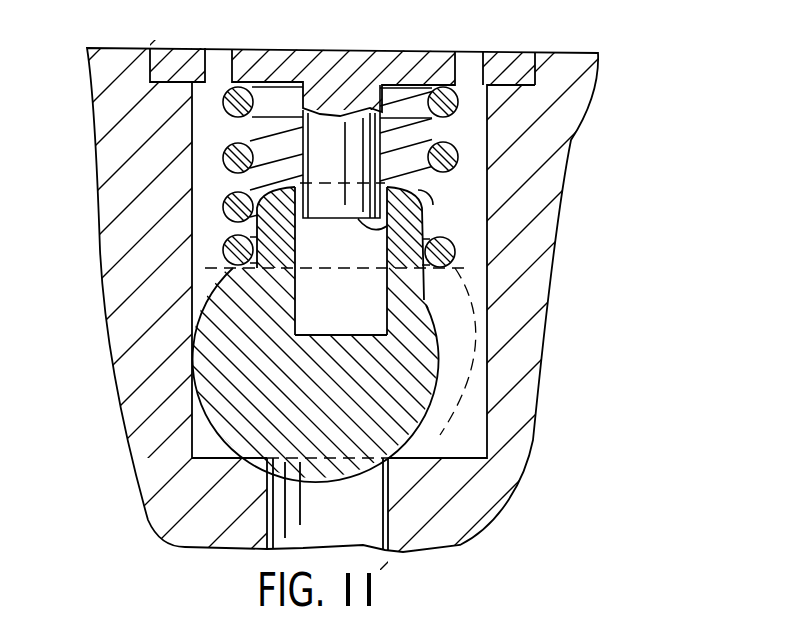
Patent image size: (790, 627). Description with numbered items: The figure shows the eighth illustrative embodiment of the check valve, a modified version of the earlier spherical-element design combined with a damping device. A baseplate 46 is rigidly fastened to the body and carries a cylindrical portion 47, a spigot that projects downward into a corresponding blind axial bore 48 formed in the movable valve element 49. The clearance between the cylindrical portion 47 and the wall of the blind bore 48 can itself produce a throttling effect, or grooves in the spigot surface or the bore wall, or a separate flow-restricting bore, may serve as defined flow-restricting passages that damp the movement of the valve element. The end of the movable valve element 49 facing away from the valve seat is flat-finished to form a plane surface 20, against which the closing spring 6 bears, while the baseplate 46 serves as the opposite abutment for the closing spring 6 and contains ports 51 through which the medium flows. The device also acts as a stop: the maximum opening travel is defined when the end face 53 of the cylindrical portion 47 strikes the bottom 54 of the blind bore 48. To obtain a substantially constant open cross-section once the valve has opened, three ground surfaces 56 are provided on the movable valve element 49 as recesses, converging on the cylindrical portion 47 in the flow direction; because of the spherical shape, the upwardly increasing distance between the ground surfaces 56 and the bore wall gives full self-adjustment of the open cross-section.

The closing spring 6 is at (241, 96).
The cylindrical portion 47 is at (339, 142).
The baseplate 46 is at (353, 70).
The ports 51 is at (467, 70).
The end face 53 is at (387, 230).
The plane surface 20 is at (430, 273).
The blind axial bore 48 is at (296, 287).
The movable valve element 49 is at (413, 332).
The bottom 54 is at (322, 336).
The ground surfaces 56 is at (457, 370).